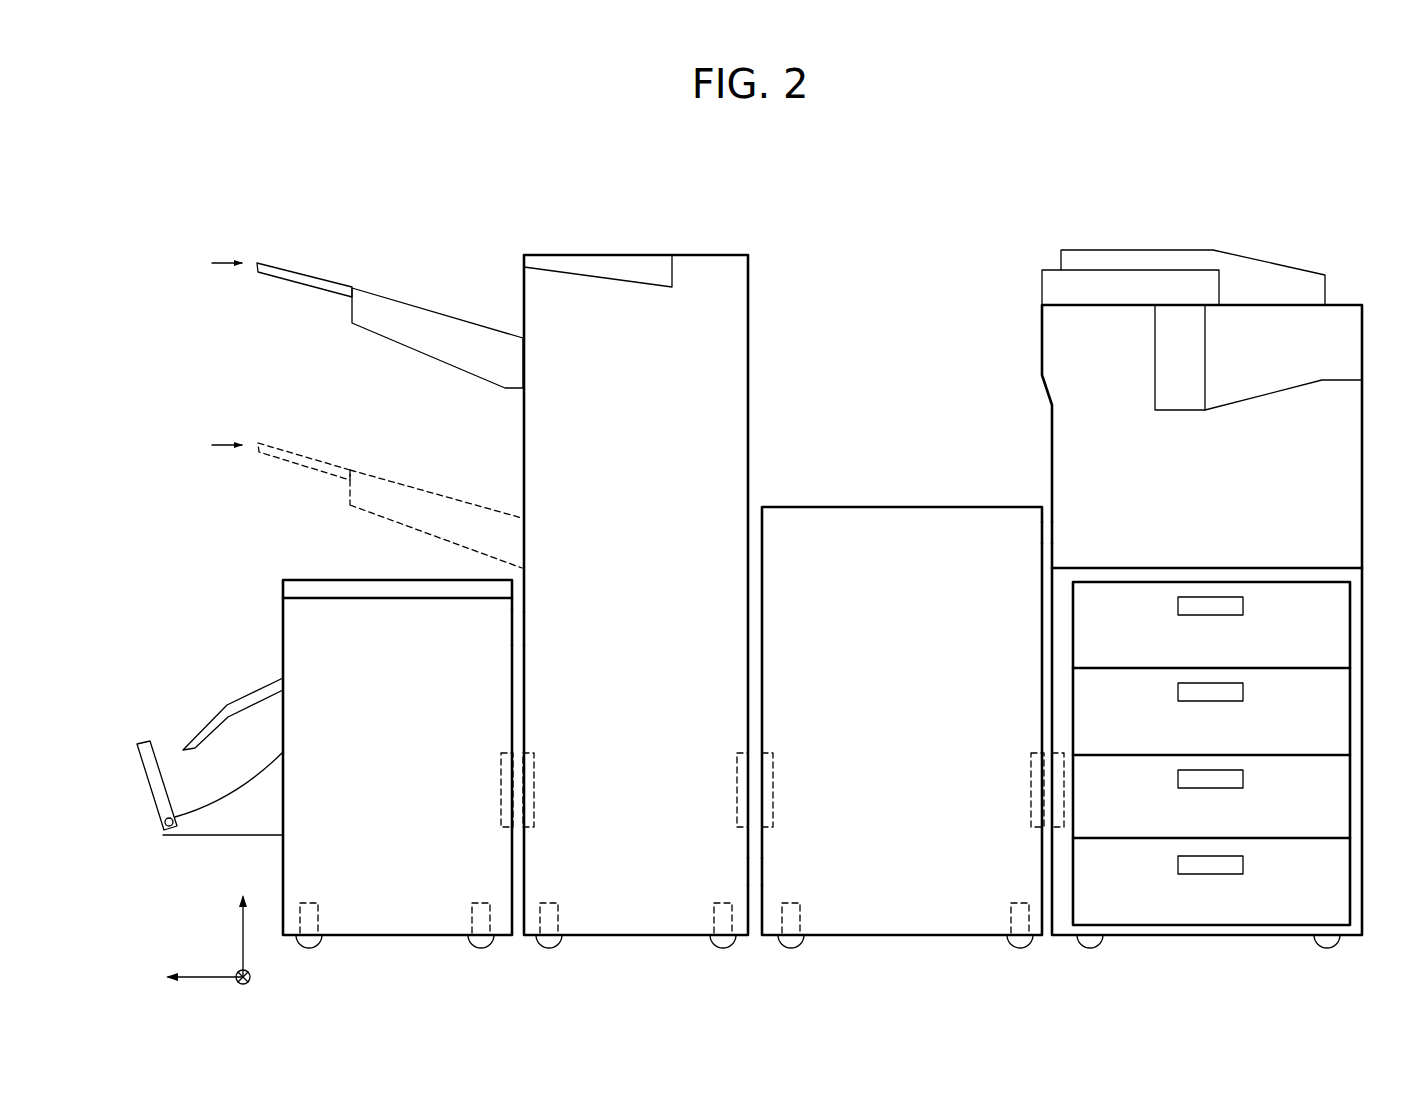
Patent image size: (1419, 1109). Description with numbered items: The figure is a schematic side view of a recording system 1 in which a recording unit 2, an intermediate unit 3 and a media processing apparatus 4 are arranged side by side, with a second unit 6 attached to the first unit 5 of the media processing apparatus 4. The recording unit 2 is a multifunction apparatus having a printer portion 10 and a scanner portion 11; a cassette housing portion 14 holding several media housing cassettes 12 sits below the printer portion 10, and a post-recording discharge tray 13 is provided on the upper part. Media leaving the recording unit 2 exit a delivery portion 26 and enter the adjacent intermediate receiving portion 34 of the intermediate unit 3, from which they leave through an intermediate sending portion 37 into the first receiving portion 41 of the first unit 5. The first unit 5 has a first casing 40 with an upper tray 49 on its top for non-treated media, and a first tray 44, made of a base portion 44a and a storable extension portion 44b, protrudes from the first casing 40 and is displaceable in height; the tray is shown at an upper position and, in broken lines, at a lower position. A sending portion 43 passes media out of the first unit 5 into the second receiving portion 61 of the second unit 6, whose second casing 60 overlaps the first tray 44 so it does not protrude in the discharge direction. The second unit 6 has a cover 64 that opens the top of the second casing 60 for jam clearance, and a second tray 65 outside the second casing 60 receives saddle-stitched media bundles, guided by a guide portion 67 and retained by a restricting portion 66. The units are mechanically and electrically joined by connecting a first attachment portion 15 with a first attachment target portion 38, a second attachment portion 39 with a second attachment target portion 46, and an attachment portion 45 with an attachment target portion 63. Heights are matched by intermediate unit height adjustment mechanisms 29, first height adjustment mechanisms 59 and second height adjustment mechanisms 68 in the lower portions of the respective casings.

The recording system 1 is at (930, 237).
The recording unit 2 is at (1020, 320).
The intermediate unit 3 is at (871, 490).
The media processing apparatus 4 is at (697, 235).
The first unit 5 is at (749, 562).
The second unit 6 is at (270, 570).
The printer portion 10 is at (1375, 310).
The scanner portion 11 is at (1213, 250).
The media housing cassette 12 is at (1143, 668).
The post-recording discharge tray 13 is at (1277, 390).
The cassette housing portion 14 is at (1375, 575).
The first attachment portion 15 is at (1064, 789).
The delivery portion 26 is at (1058, 527).
The intermediate unit height adjustment mechanism 29 is at (798, 922).
The intermediate receiving portion 34 is at (1039, 533).
The intermediate sending portion 37 is at (768, 859).
The first attachment target portion 38 is at (1031, 789).
The second attachment portion 39 is at (776, 755).
The first casing 40 is at (750, 316).
The first receiving portion 41 is at (748, 868).
The sending portion 43 is at (530, 612).
The first tray 44 is at (430, 183).
The base portion 44a is at (373, 290).
The extension portion 44b is at (298, 263).
The attachment portion 45 is at (538, 755).
The second attachment target portion 46 is at (728, 755).
The upper tray 49 is at (565, 272).
The first height adjustment mechanism 59 is at (558, 922).
The second casing 60 is at (283, 618).
The second receiving portion 61 is at (505, 618).
The attachment target portion 63 is at (500, 755).
The cover 64 is at (345, 580).
The second tray 65 is at (213, 783).
The restricting portion 66 is at (143, 778).
The guide portion 67 is at (218, 708).
The second height adjustment mechanism 68 is at (320, 922).